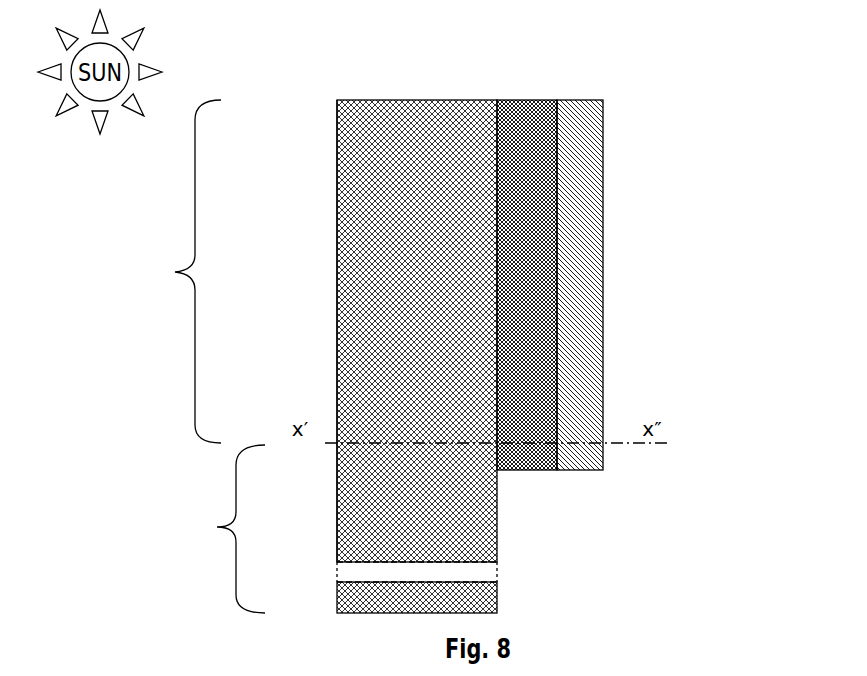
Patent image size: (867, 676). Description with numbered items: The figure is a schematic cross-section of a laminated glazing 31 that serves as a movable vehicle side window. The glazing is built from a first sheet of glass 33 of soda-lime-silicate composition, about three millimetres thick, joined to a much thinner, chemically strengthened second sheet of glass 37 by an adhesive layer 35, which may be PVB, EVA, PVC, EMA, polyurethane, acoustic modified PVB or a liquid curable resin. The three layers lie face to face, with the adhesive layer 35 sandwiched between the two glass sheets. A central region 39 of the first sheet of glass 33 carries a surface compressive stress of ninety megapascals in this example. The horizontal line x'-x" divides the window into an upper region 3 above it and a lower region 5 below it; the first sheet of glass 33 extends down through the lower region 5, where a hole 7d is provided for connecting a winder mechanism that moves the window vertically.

The laminated glazing 31 is at (490, 310).
The first sheet of glass 33 is at (455, 115).
The adhesive layer 35 is at (525, 118).
The second sheet of glass 37 is at (583, 118).
The central region 39 is at (335, 267).
The upper region 3 is at (172, 272).
The lower region 5 is at (214, 527).
The hole 7d is at (505, 572).